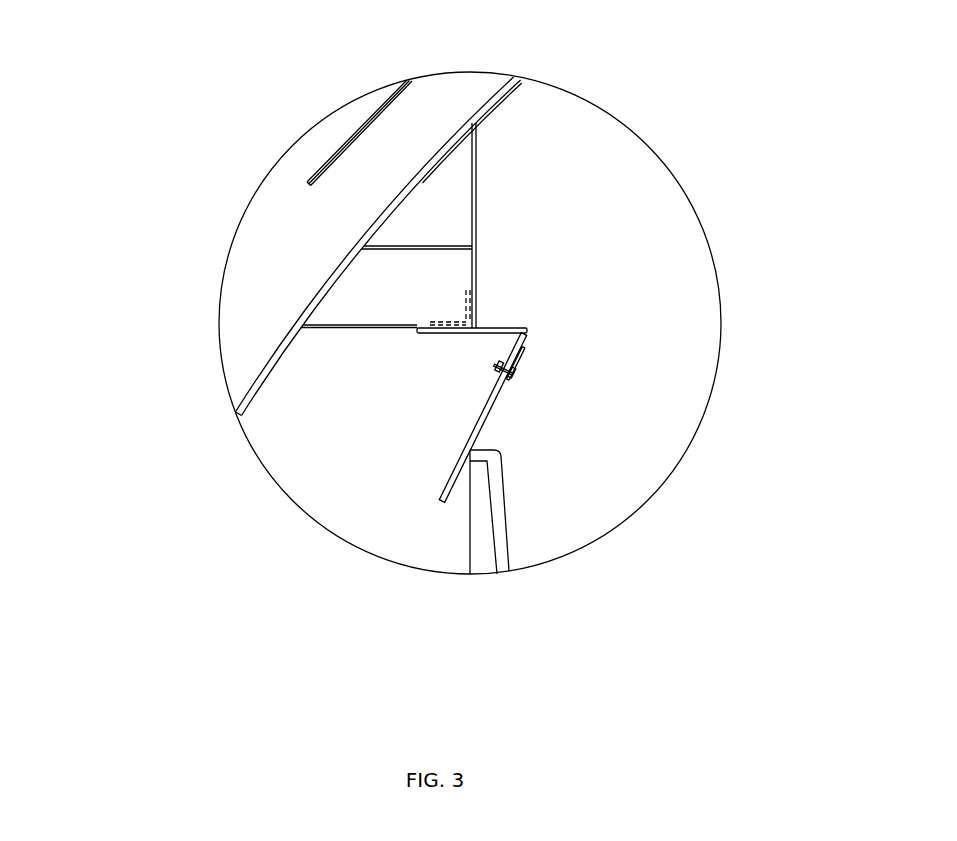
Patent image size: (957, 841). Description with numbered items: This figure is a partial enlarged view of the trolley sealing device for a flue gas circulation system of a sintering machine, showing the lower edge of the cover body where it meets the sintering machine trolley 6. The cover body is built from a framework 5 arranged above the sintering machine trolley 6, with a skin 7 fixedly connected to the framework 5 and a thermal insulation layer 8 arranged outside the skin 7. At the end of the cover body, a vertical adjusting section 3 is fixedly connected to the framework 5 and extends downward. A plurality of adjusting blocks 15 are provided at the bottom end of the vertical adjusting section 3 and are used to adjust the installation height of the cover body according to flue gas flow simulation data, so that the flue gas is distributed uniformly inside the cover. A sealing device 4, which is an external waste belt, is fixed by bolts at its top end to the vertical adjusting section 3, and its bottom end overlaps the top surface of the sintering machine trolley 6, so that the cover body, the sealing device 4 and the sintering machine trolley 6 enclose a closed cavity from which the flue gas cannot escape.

The vertical adjusting section 3 is at (476, 190).
The sealing device 4 is at (477, 423).
The framework 5 is at (263, 370).
The sintering machine trolley 6 is at (478, 519).
The skin 7 is at (308, 183).
The thermal insulation layer 8 is at (366, 232).
The adjusting block 15 is at (497, 332).